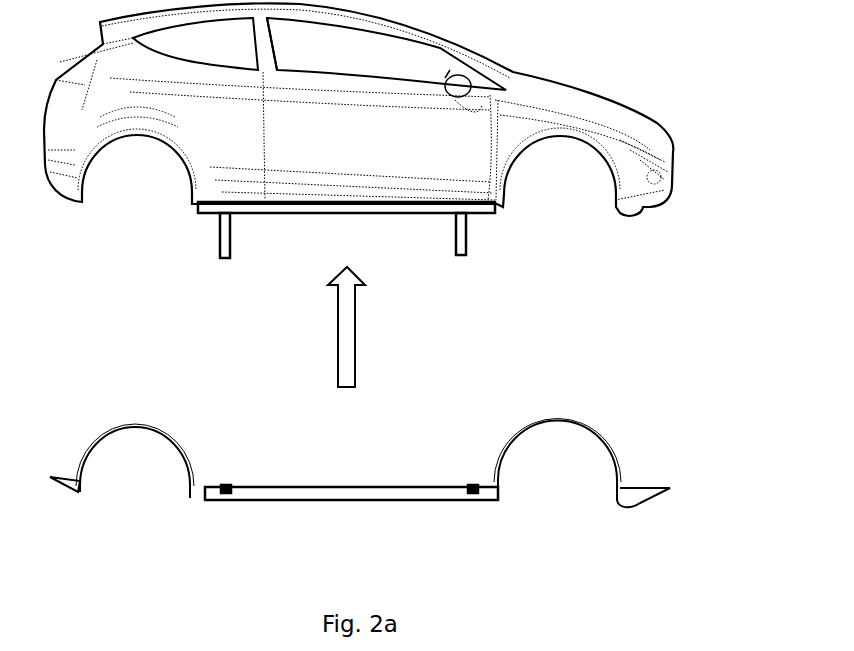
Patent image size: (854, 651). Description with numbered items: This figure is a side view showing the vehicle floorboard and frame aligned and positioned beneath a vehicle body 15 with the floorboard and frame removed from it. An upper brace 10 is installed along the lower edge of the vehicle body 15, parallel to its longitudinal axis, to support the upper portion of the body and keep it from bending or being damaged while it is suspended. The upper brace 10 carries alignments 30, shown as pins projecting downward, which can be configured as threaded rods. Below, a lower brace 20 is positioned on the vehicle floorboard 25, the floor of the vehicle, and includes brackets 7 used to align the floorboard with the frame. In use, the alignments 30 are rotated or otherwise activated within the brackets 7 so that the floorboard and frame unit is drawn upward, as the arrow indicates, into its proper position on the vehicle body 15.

The vehicle body 15 is at (660, 140).
The upper brace 10 is at (368, 213).
The alignment 30 is at (219, 247).
The bracket 7 is at (478, 485).
The lower brace 20 is at (250, 500).
The vehicle floorboard 25 is at (645, 490).